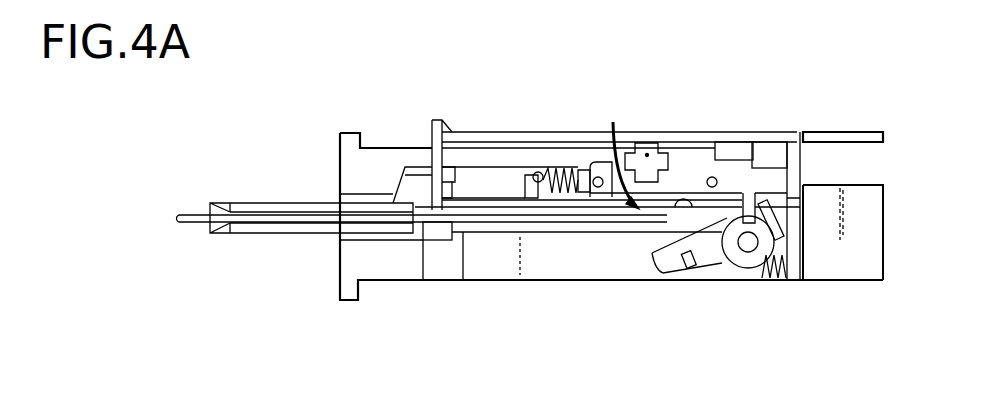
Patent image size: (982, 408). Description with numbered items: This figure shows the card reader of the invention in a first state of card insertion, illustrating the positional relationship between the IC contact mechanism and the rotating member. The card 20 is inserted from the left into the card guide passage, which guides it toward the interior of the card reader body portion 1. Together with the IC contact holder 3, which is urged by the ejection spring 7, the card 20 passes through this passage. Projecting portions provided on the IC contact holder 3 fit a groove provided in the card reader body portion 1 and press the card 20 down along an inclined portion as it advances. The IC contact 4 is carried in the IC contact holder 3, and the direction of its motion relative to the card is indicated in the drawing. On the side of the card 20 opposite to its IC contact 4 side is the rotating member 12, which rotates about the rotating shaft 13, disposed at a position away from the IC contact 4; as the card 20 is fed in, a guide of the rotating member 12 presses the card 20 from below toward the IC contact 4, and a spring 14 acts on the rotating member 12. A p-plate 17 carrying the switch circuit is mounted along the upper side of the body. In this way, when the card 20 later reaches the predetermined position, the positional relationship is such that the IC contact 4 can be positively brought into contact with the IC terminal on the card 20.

The card reader body portion 1 is at (390, 265).
The IC contact holder 3 is at (733, 172).
The IC contact 4 is at (622, 154).
The ejection spring 7 is at (562, 165).
The rotating member 12 is at (704, 262).
The rotating shaft 13 is at (749, 250).
The spring 14 is at (785, 272).
The p-plate 17 is at (843, 133).
The card 20 is at (195, 213).